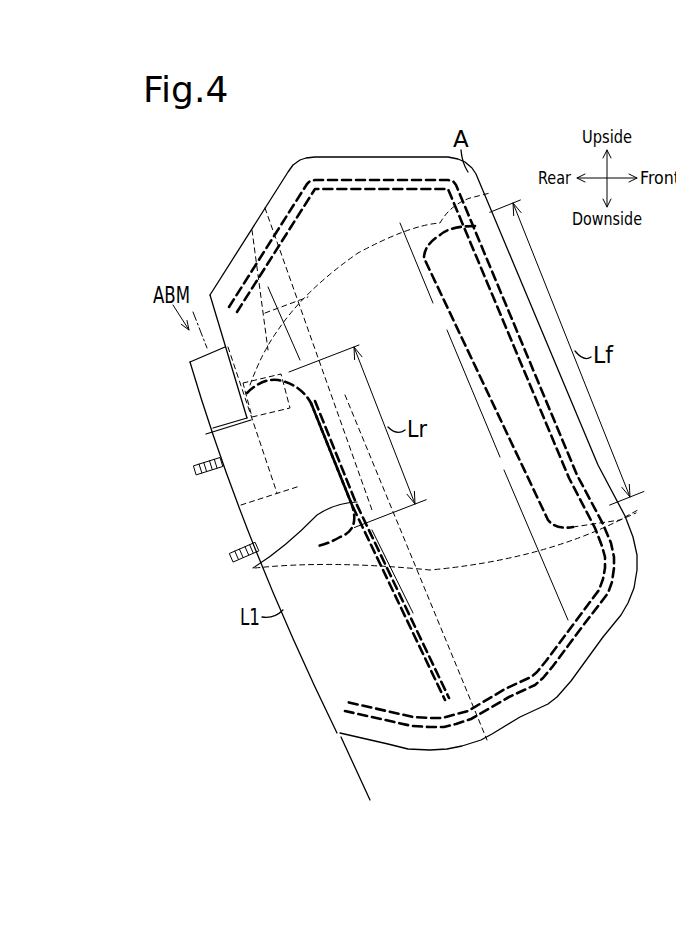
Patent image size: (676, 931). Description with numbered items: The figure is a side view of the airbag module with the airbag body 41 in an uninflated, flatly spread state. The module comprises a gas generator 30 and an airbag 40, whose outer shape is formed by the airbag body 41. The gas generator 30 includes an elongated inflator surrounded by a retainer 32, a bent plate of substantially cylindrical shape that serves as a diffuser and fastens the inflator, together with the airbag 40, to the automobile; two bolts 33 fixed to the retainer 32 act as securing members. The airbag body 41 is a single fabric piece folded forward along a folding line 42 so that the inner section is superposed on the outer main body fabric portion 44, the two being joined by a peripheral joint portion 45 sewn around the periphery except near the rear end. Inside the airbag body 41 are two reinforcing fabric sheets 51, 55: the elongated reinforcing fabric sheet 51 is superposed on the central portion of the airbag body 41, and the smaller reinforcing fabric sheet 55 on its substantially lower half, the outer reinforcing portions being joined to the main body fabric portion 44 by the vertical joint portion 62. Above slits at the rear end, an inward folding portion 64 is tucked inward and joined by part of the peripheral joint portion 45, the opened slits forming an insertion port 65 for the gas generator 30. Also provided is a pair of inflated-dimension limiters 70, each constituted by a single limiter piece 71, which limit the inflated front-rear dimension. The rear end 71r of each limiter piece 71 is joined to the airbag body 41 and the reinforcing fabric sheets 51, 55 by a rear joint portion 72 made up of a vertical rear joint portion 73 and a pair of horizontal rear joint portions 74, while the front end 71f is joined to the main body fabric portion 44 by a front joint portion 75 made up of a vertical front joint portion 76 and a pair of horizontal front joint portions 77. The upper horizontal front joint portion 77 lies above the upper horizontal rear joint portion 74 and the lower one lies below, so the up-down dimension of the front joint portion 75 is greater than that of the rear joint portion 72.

The airbag 40 is at (413, 434).
The airbag body 41 is at (314, 158).
The main body fabric portion 44 is at (345, 157).
The peripheral joint portion 45 is at (401, 189).
The inflated-dimension limiter 70 is at (443, 351).
The limiter piece 71 is at (443, 363).
The front end 71f is at (543, 428).
The rear end 71r is at (363, 557).
The horizontal front joint portion 77 is at (428, 262).
The vertical front joint portion 76 is at (455, 338).
The front joint portion 75 is at (418, 421).
The reinforcing fabric sheet 51 is at (279, 246).
The inward folding portion 64 is at (285, 290).
The horizontal rear joint portion 74 is at (265, 384).
The retainer 32 is at (191, 376).
The gas generator 30 is at (193, 387).
The insertion port 65 is at (216, 429).
The bolts 33 is at (230, 557).
The vertical rear joint portion 73 is at (262, 567).
The rear joint portion 72 is at (399, 543).
The vertical joint portion 62 is at (410, 604).
The reinforcing fabric sheet 55 is at (452, 652).
The folding line 42 is at (357, 774).